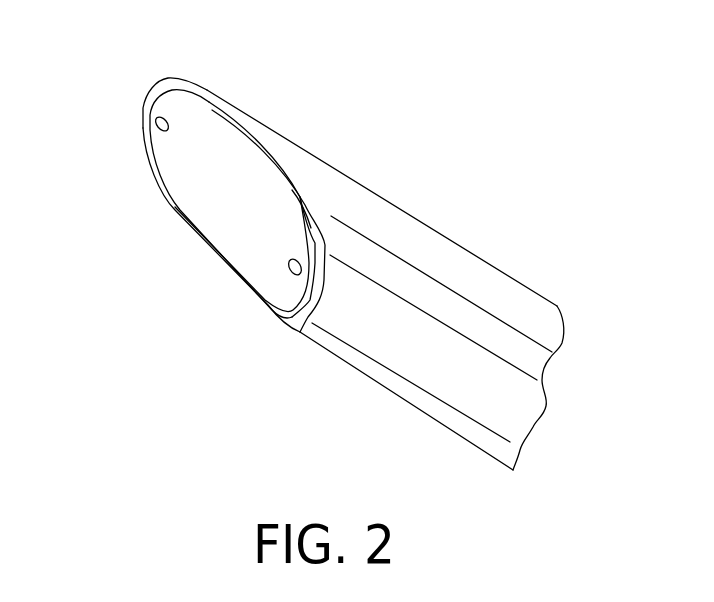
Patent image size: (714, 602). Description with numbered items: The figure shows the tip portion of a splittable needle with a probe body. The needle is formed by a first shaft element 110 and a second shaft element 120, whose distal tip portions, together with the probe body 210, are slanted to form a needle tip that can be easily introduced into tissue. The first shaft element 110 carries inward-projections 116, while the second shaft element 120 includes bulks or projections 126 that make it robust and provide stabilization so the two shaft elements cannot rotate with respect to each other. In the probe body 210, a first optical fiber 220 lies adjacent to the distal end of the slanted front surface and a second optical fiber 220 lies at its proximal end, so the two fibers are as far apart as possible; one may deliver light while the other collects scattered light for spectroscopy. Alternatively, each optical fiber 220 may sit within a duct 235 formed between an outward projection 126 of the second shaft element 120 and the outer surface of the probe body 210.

The first shaft element 110 is at (433, 250).
The inward-projections 116 is at (205, 89).
The second shaft element 120 is at (457, 390).
The projections 126 is at (324, 250).
The probe body 210 is at (203, 207).
The optical fibers 220 is at (163, 124).
The duct 235 is at (312, 222).